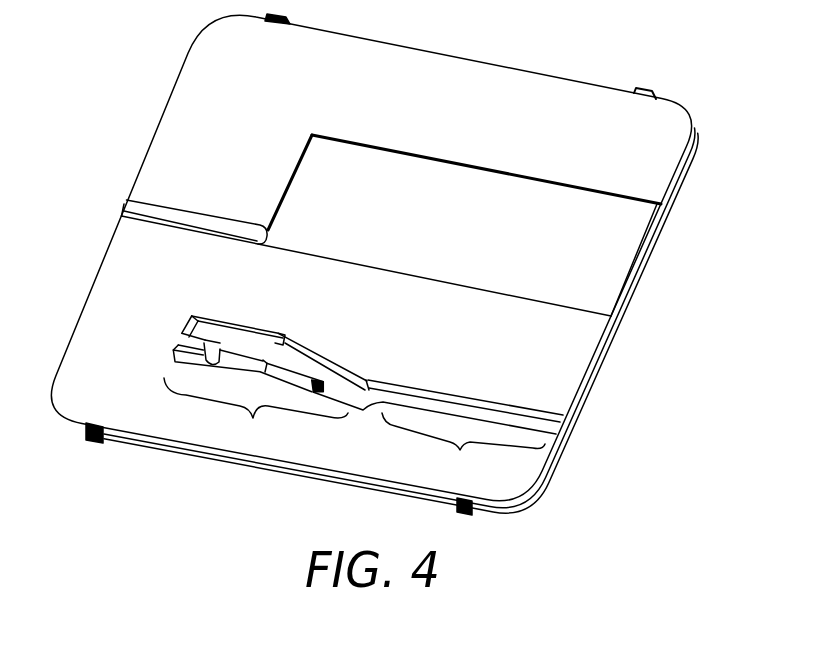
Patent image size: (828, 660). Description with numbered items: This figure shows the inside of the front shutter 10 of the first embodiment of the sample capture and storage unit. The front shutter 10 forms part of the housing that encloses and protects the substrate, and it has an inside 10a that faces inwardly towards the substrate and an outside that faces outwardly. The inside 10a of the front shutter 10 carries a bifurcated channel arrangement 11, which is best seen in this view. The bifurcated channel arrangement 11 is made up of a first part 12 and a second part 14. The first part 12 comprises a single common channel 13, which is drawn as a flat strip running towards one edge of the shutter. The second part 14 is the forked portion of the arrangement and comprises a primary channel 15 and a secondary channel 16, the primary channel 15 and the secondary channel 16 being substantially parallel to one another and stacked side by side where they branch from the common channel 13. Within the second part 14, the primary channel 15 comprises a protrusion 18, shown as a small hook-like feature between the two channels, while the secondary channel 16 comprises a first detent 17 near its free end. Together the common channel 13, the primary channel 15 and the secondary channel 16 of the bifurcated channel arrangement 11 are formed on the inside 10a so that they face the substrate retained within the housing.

The front shutter 10 is at (570, 78).
The inside of the front shutter 10a is at (463, 75).
The bifurcated channel arrangement 11 is at (361, 412).
The first part 12 is at (465, 430).
The common channel 13 is at (493, 418).
The second part 14 is at (247, 361).
The primary channel 15 is at (187, 360).
The secondary channel 16 is at (262, 342).
The first detent 17 is at (200, 332).
The protrusion 18 is at (212, 343).